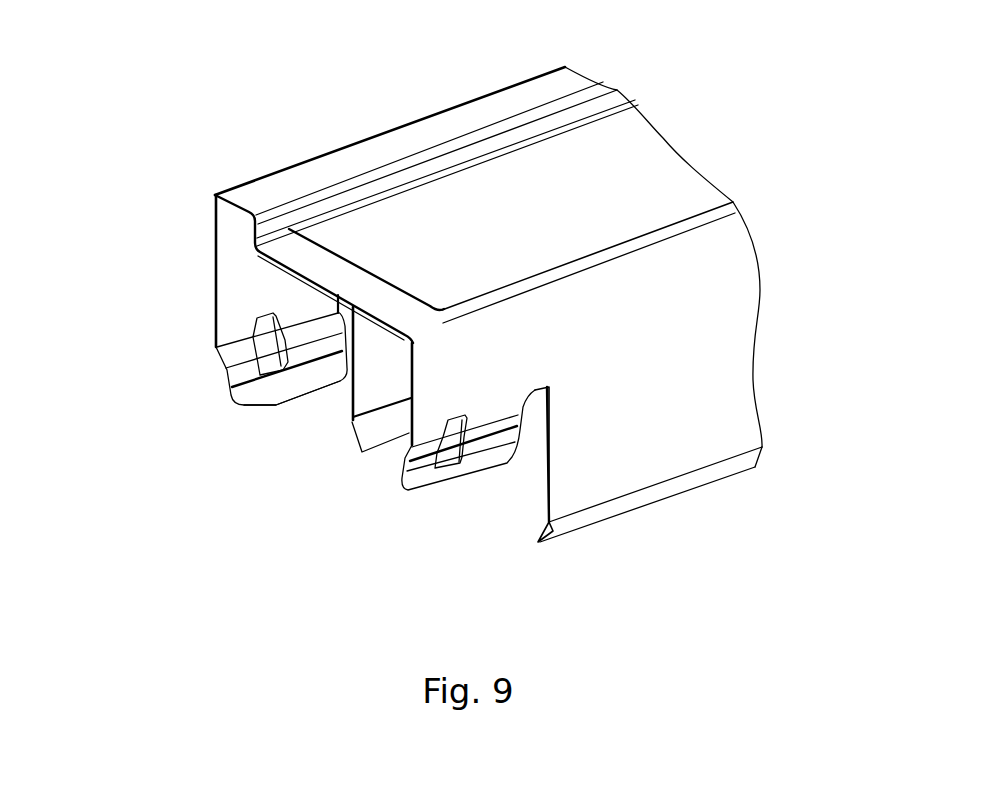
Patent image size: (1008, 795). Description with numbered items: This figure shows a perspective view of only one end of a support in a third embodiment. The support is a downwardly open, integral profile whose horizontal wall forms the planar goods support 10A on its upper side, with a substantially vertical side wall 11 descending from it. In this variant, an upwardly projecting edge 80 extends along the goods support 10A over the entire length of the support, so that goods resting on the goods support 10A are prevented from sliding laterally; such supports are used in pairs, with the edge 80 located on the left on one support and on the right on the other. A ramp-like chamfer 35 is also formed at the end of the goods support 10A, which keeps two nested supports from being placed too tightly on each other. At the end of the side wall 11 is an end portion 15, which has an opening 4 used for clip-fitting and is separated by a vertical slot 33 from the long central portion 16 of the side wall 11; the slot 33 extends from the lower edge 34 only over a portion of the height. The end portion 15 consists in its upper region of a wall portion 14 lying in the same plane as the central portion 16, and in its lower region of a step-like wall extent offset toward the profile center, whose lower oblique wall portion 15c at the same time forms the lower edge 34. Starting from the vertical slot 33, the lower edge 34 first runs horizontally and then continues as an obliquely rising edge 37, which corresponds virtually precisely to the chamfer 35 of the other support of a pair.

The goods support 10A is at (650, 190).
The upwardly projecting edge 80 is at (408, 145).
The ramp-like chamfer 35 is at (292, 258).
The side wall 11 is at (677, 324).
The central portion 16 is at (720, 483).
The vertical slot 33 is at (533, 415).
The wall portion 14 is at (457, 373).
The lower oblique wall portion 15c is at (243, 393).
The obliquely rising edge 37 is at (250, 393).
The lower edge 34 is at (308, 397).
The end portion 15 is at (420, 498).
The opening 4 is at (267, 342).